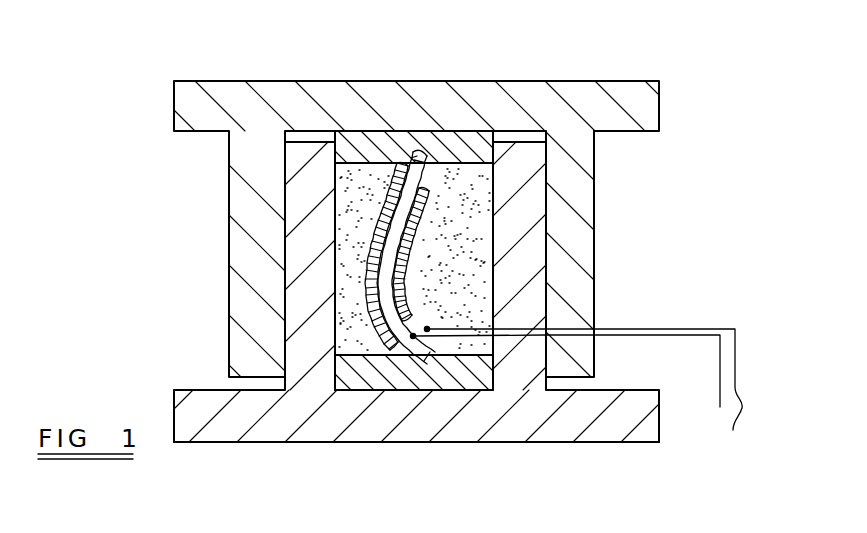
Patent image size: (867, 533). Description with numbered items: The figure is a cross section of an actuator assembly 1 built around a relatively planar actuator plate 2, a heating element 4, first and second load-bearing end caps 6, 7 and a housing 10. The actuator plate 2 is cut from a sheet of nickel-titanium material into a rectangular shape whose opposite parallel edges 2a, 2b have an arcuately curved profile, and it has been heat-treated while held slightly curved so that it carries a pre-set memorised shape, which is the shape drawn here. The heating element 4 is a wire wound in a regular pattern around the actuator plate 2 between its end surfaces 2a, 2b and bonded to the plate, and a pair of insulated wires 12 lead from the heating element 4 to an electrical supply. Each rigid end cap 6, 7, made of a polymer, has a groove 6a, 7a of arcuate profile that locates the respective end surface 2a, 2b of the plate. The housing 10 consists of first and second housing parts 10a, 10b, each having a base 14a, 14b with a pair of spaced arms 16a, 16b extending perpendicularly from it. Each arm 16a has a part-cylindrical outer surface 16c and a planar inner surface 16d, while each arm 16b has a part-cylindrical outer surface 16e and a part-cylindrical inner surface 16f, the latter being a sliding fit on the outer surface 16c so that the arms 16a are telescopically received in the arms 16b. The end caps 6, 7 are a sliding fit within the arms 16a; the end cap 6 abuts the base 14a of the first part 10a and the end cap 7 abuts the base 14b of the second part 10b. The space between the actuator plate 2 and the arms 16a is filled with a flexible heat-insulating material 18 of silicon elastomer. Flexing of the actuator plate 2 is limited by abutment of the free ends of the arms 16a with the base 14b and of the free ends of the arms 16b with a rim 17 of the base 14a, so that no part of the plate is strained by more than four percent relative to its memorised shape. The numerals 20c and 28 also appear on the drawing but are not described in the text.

The actuator assembly 1 is at (88, 222).
The actuator plate 2 is at (402, 222).
The edge 2a is at (436, 362).
The edge 2b is at (408, 162).
The heating element 4 is at (417, 270).
The first load-bearing end cap 6 is at (344, 368).
The groove 6a is at (398, 360).
The second load-bearing end cap 7 is at (382, 152).
The groove 7a is at (436, 150).
The housing 10 is at (212, 157).
The first housing part 10a is at (280, 311).
The second housing part 10b is at (738, 246).
The insulated wires 12 is at (581, 397).
The base 14a is at (512, 428).
The base 14b is at (365, 95).
The arms 16a is at (668, 366).
The arms 16b is at (698, 204).
The part-cylindrical outer surface 16c is at (302, 264).
The planar inner surface 16d is at (302, 386).
The part-cylindrical outer surface 16e is at (593, 150).
The part-cylindrical inner surface 16f is at (545, 296).
The rim 17 is at (194, 402).
The flexible heat-insulating material 18 is at (475, 184).
The base portion 20c is at (700, 522).
The mounting element 28 is at (152, 481).